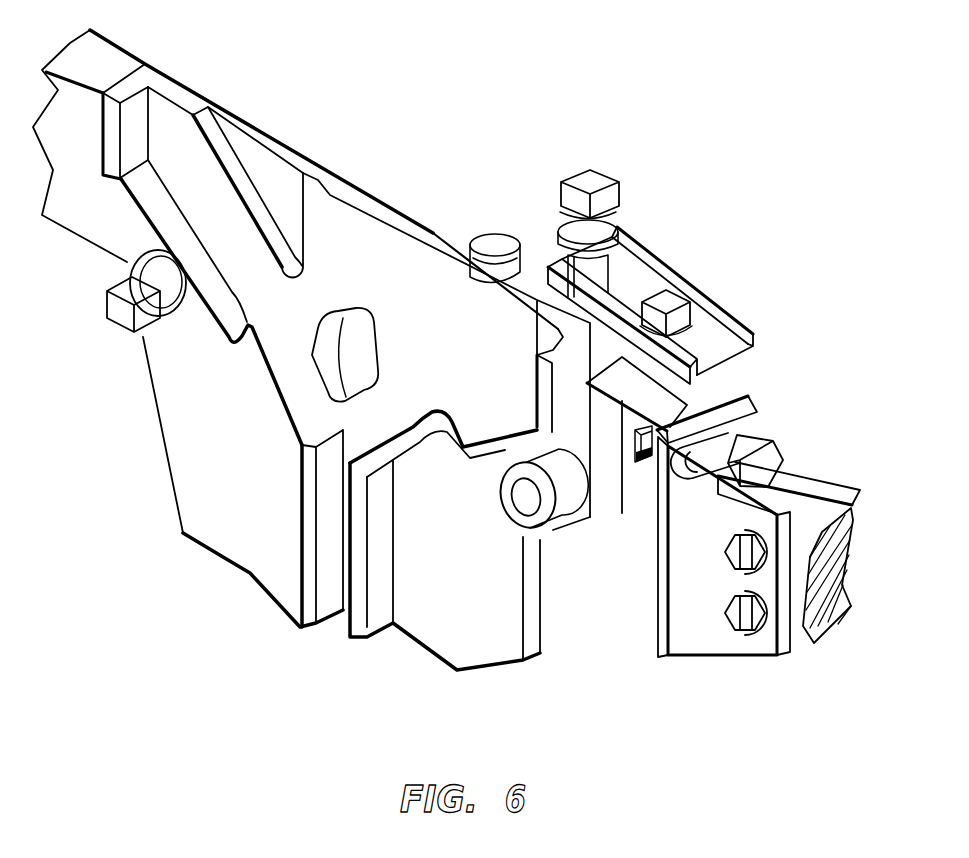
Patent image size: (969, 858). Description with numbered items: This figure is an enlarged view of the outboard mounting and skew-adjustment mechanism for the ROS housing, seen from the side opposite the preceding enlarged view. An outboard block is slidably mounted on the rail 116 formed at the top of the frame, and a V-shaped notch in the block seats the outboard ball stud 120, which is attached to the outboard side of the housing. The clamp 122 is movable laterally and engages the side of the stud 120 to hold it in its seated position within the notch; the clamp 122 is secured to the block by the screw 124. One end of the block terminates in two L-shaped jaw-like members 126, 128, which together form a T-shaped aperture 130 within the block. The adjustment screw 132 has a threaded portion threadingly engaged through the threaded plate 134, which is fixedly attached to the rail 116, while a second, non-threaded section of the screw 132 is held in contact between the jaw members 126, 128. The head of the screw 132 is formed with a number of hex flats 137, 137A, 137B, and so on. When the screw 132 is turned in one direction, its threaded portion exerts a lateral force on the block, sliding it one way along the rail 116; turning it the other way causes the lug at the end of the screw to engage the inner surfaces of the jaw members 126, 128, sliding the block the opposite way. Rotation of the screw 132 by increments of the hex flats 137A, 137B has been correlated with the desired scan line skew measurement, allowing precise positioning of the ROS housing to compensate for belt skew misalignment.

The rail 116 is at (827, 512).
The outboard ball stud 120 is at (550, 250).
The clamp 122 is at (727, 307).
The screw 124 is at (633, 277).
The L-shaped jaw member 126 is at (753, 328).
The L-shaped jaw member 128 is at (668, 462).
The T-shaped aperture 130 is at (636, 455).
The adjustment screw 132 is at (772, 443).
The threaded plate 134 is at (683, 630).
The hex flat 137 is at (757, 428).
The hex flat 137A is at (760, 437).
The hex flat 137B is at (718, 467).